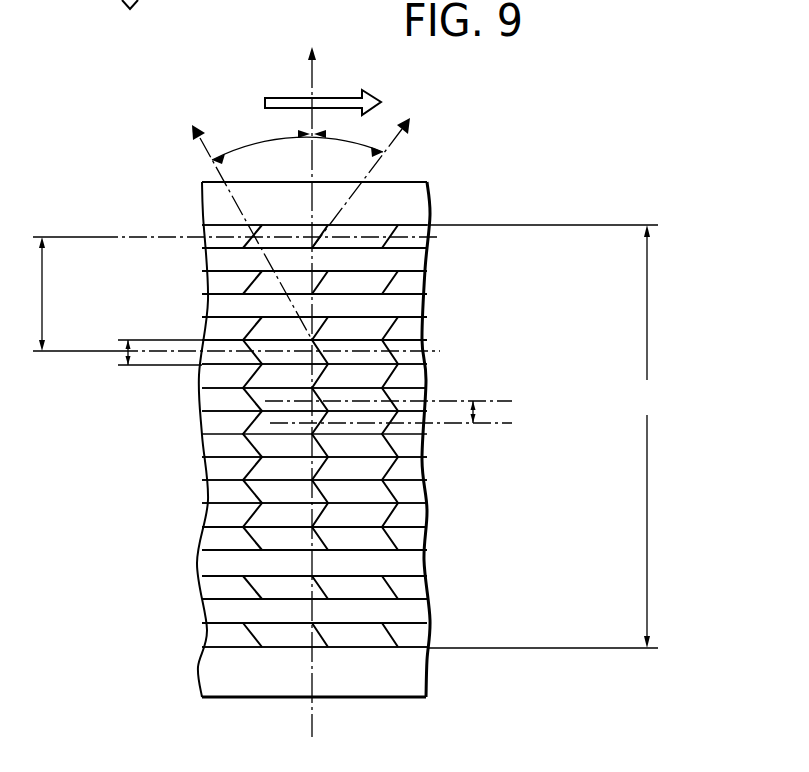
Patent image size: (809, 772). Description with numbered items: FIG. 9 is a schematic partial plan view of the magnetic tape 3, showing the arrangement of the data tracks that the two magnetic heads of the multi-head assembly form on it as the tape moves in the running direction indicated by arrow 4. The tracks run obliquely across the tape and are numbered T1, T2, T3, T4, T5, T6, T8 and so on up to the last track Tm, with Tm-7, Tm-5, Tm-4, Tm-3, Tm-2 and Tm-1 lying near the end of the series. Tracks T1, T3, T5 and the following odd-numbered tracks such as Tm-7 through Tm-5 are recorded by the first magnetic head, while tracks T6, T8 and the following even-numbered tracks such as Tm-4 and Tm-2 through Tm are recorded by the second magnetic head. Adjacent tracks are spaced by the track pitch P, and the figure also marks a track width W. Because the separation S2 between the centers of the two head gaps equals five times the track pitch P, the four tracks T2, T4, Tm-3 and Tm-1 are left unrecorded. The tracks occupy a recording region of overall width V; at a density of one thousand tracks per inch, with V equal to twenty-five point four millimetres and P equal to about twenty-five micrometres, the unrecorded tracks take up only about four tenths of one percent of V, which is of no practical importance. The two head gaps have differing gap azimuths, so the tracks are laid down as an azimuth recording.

The magnetic tape 3 is at (425, 196).
The tape running direction 4 is at (340, 98).
The track T1 is at (428, 232).
The track T2 is at (410, 258).
The track T3 is at (417, 282).
The track T4 is at (418, 307).
The track T5 is at (418, 330).
The track T6 is at (202, 342).
The track T8 is at (202, 393).
The track Tm-7 is at (407, 470).
The track Tm-5 is at (418, 518).
The track Tm-4 is at (203, 540).
The track Tm-3 is at (412, 562).
The track Tm-2 is at (203, 583).
The track Tm-1 is at (410, 610).
The track Tm is at (212, 633).
The track pitch P is at (475, 408).
The track width W is at (126, 354).
The width of the recording region V is at (542, 436).
The separation between head gap centers S2 is at (222, 294).